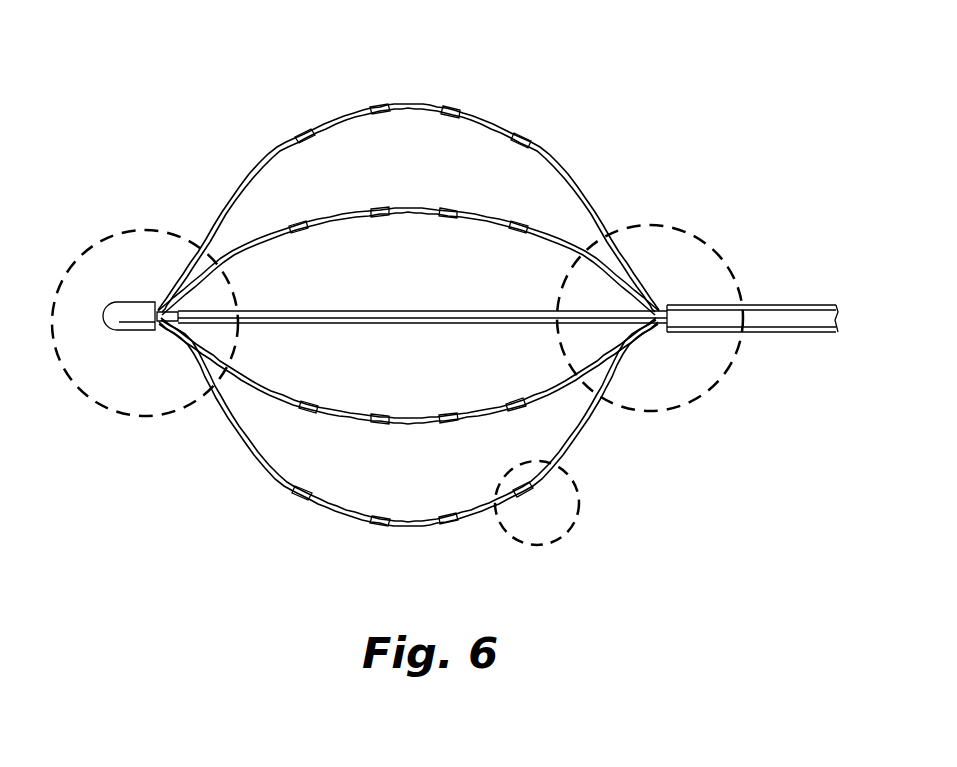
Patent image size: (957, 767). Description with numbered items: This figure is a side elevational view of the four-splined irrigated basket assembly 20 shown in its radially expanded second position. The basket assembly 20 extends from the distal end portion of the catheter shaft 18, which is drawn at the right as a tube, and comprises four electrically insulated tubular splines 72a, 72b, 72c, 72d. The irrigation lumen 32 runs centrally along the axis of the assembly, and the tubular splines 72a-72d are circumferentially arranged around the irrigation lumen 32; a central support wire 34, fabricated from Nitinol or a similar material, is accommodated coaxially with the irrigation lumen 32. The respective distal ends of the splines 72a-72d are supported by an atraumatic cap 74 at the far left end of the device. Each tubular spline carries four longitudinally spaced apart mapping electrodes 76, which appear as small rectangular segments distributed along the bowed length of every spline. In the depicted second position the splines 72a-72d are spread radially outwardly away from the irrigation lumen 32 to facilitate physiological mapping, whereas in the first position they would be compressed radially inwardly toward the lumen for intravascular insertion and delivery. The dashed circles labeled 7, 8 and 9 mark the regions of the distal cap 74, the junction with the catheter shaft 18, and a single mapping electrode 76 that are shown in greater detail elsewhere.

The four-splined irrigated basket assembly 20 is at (257, 92).
The catheter shaft 18 is at (797, 318).
The irrigation lumen 32 is at (412, 311).
The central support wire 34 is at (162, 325).
The atraumatic cap 74 is at (128, 308).
The tubular spline 72a is at (554, 160).
The tubular spline 72b is at (420, 210).
The tubular spline 72c is at (412, 420).
The tubular spline 72d is at (590, 432).
The mapping electrodes 76 is at (380, 103).
The detail view region of FIG. 7 is at (78, 245).
The detail view region of FIG. 8 is at (727, 245).
The detail view region of FIG. 9 is at (566, 545).